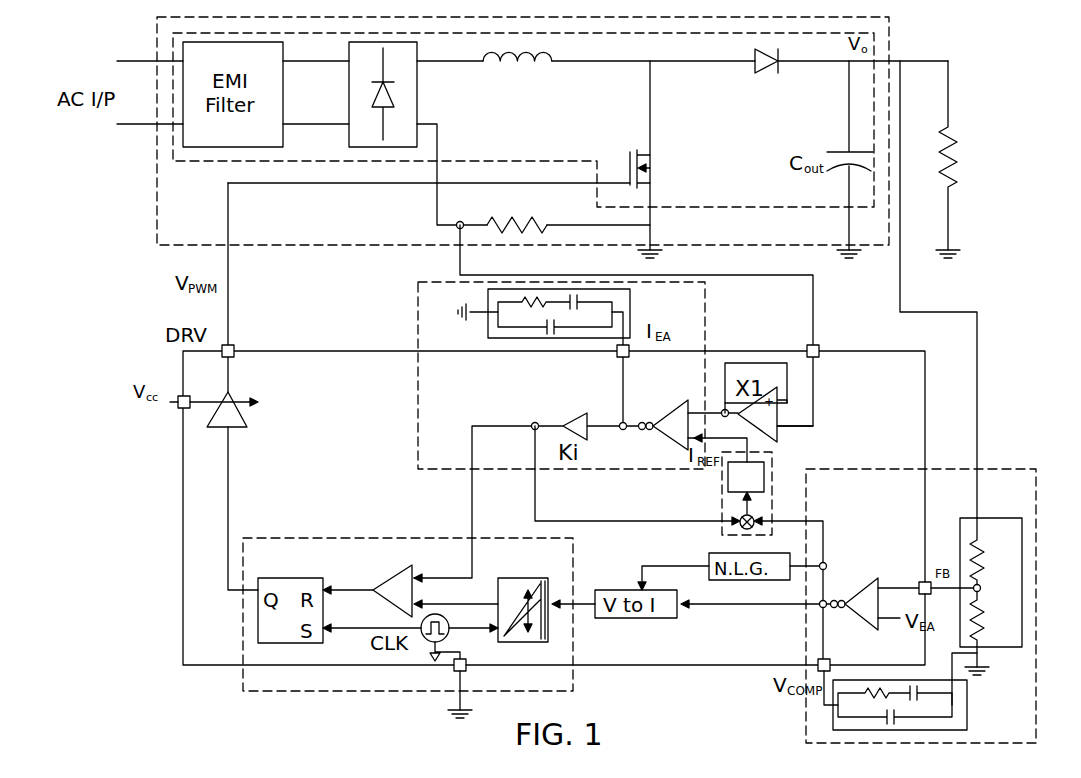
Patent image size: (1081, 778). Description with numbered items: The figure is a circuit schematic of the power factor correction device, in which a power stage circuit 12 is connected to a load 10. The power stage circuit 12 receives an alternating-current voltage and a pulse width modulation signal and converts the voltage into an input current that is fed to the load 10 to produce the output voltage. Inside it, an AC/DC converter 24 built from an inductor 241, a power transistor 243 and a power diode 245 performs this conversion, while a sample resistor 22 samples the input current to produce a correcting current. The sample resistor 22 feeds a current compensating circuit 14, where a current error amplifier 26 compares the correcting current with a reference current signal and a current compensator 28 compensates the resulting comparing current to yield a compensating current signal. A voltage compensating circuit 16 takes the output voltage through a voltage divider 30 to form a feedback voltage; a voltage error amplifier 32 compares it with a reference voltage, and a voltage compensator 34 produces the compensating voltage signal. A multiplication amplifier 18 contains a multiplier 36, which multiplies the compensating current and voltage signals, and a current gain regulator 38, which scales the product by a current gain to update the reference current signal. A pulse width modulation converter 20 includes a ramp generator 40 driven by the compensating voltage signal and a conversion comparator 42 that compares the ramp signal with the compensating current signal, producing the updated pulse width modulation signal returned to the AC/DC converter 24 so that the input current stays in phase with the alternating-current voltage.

The load 10 is at (959, 160).
The power stage circuit 12 is at (157, 176).
The current compensating circuit 14 is at (706, 318).
The voltage compensating circuit 16 is at (1020, 469).
The multiplication amplifier 18 is at (772, 465).
The pulse width modulation converter 20 is at (377, 538).
The sample resistor 22 is at (488, 217).
The AC/DC converter 24 is at (367, 163).
The current error amplifier 26 is at (672, 410).
The current compensator 28 is at (515, 338).
The voltage divider 30 is at (965, 518).
The voltage error amplifier 32 is at (860, 578).
The voltage compensator 34 is at (968, 706).
The multiplier 36 is at (738, 528).
The current gain regulator 38 is at (728, 480).
The ramp generator 40 is at (552, 585).
The conversion comparator 42 is at (385, 578).
The inductor 241 is at (534, 62).
The power transistor 243 is at (650, 152).
The power diode 245 is at (752, 62).